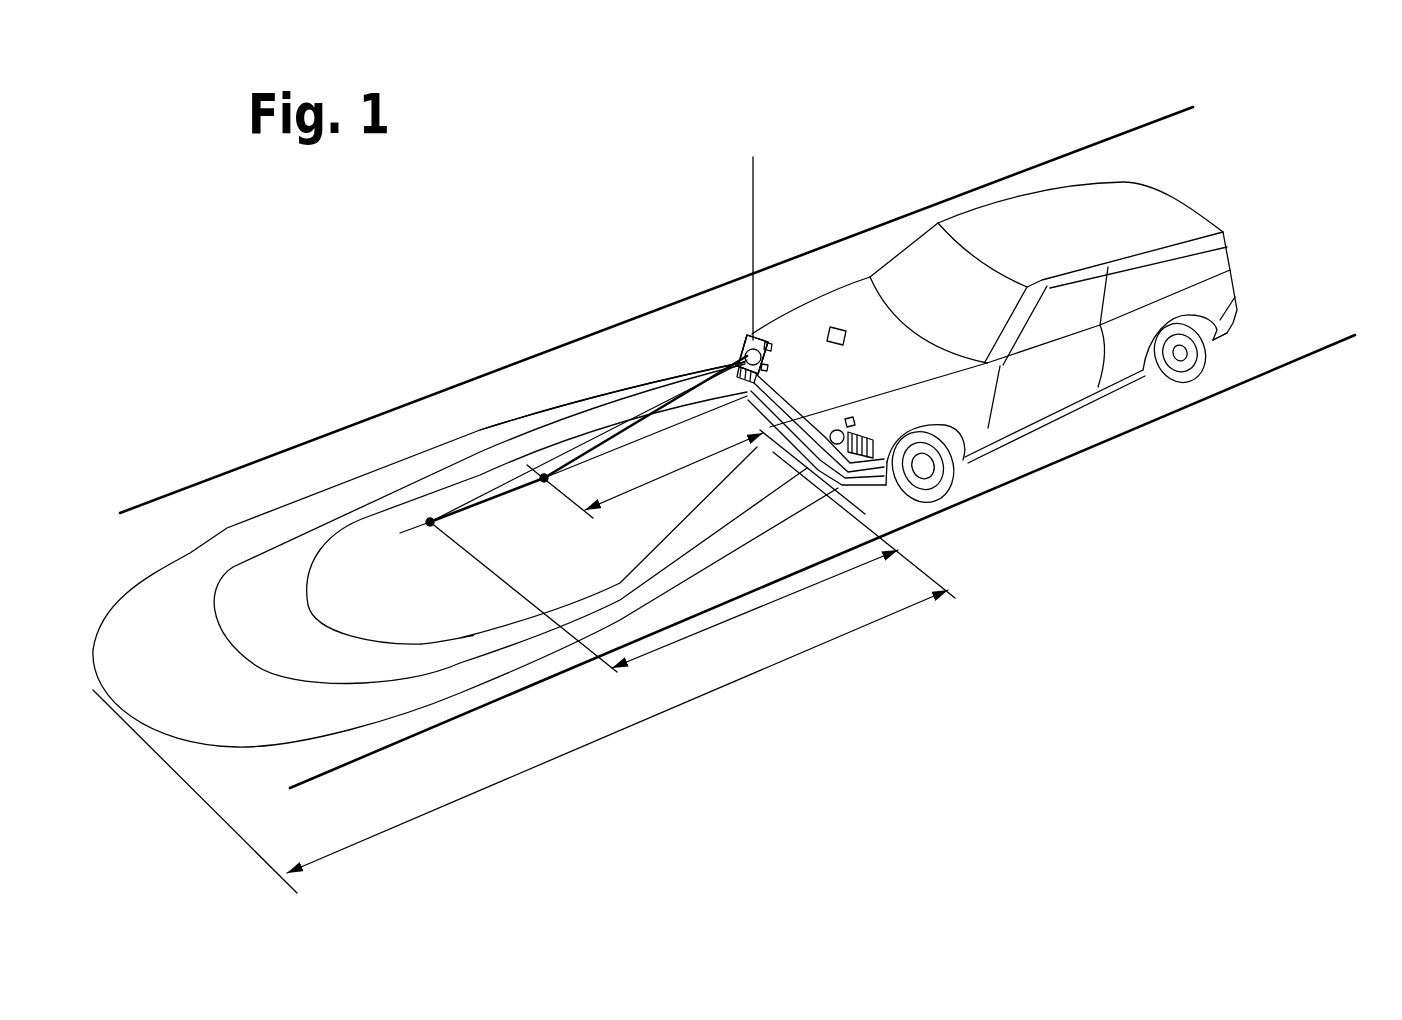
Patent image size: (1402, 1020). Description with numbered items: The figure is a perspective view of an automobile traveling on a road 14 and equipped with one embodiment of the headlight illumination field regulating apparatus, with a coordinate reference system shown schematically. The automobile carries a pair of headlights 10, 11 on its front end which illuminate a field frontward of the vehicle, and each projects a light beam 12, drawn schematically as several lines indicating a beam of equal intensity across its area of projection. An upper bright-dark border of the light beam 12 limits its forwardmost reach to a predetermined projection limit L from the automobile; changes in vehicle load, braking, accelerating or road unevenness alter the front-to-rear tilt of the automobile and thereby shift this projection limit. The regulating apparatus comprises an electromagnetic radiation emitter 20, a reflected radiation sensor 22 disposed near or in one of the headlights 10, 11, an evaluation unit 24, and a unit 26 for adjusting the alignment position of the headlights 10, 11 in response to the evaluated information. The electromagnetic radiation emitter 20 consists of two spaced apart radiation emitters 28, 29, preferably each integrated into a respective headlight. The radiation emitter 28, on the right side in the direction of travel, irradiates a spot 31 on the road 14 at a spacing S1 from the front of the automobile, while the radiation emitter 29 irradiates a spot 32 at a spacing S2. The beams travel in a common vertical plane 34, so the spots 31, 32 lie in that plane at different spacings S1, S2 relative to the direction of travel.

The headlight 10 is at (752, 334).
The headlight 11 is at (836, 430).
The light beam 12 is at (353, 543).
The road 14 is at (387, 739).
The electromagnetic radiation emitter 20 is at (770, 356).
The reflected radiation sensor 22 is at (770, 356).
The evaluation unit 24 is at (847, 328).
The unit for adjusting the alignment position of the headlights 26 is at (757, 334).
The radiation emitter 28 is at (617, 432).
The radiation emitter 29 is at (478, 495).
The spot 31 is at (544, 477).
The spot 32 is at (428, 520).
The common vertical plane 34 is at (690, 365).
The spacing s1 S1 is at (672, 472).
The spacing s2 S2 is at (706, 628).
The projection limit L is at (577, 750).